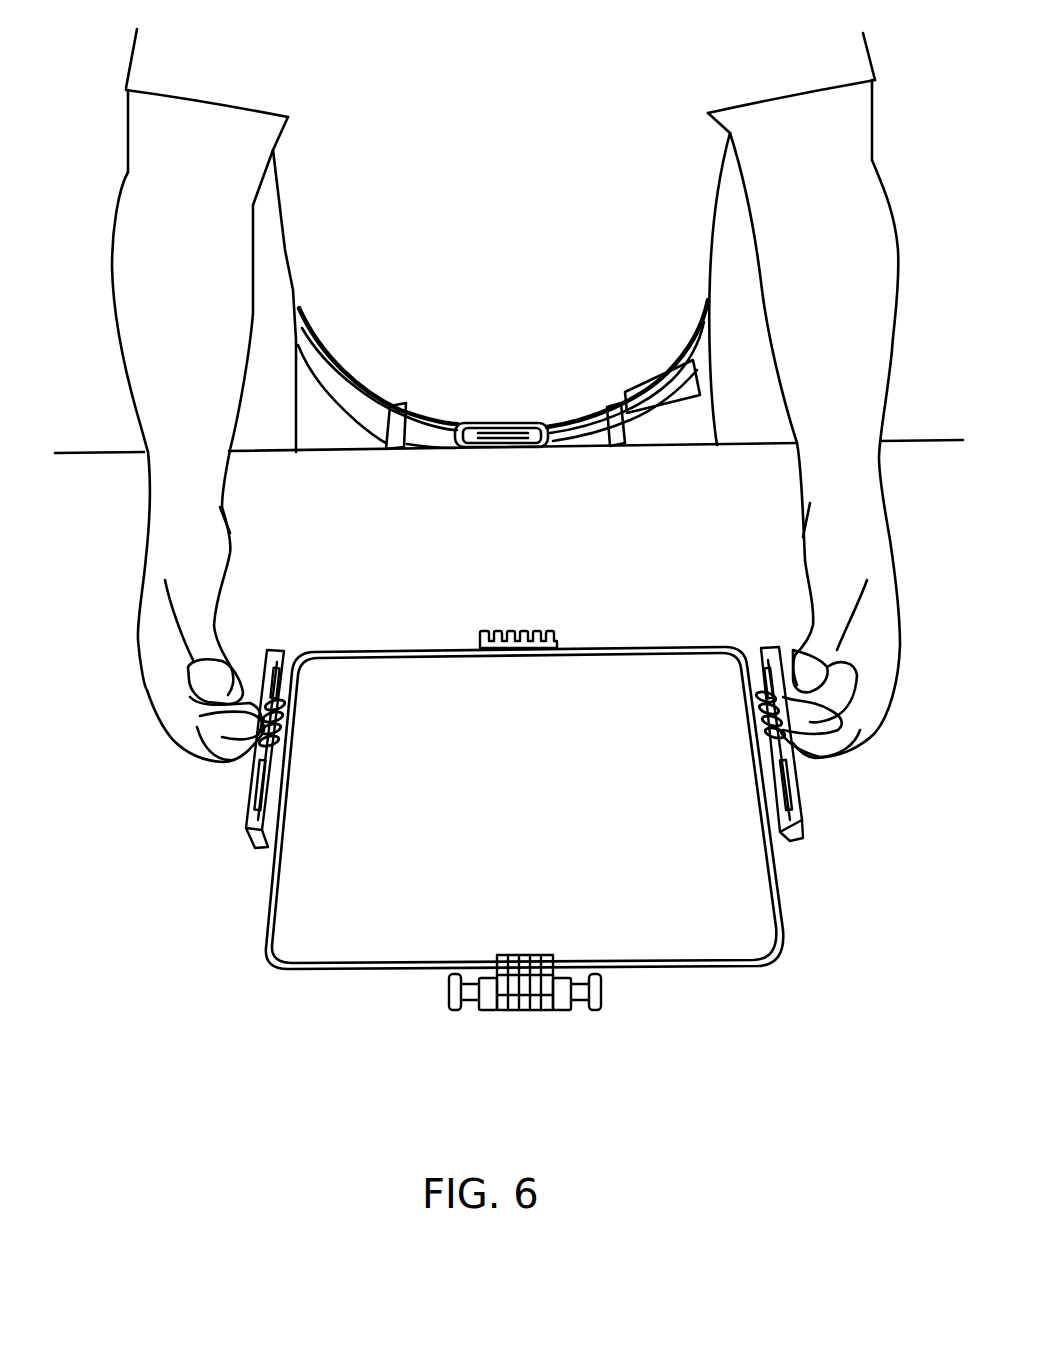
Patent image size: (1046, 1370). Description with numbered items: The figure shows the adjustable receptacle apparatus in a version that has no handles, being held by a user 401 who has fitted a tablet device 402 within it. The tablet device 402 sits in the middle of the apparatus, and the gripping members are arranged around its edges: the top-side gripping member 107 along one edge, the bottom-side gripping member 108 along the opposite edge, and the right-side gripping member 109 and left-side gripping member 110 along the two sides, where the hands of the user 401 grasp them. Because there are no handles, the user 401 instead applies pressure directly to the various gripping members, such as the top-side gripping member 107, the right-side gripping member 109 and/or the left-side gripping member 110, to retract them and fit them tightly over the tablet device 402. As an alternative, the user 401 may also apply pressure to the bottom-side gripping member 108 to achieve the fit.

The user 401 is at (157, 145).
The tablet device 402 is at (288, 937).
The top-side gripping member 107 is at (523, 1010).
The bottom-side gripping member 108 is at (527, 630).
The right-side gripping member 109 is at (292, 717).
The left-side gripping member 110 is at (747, 710).